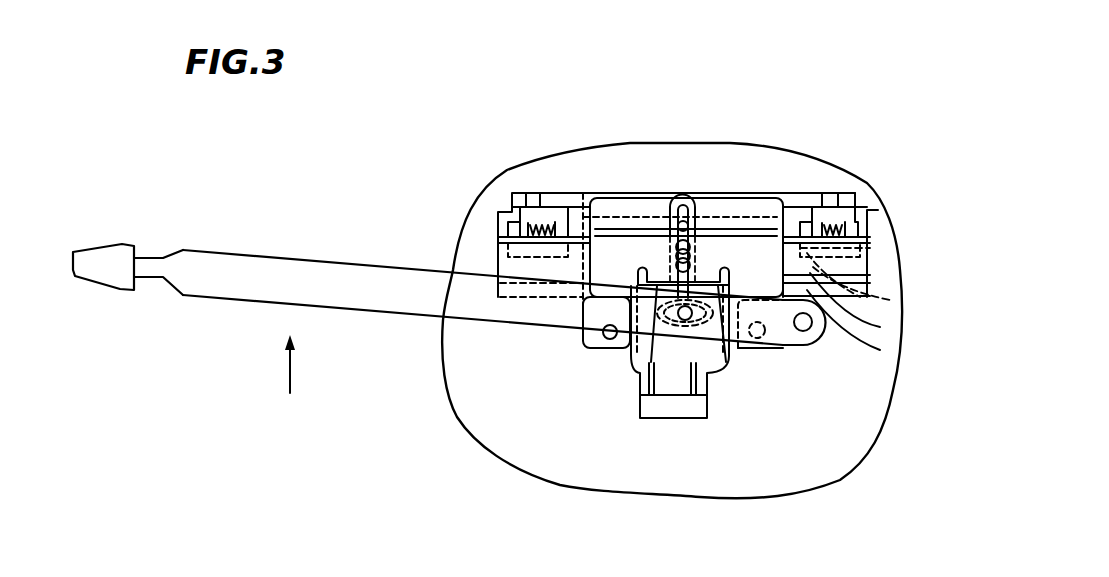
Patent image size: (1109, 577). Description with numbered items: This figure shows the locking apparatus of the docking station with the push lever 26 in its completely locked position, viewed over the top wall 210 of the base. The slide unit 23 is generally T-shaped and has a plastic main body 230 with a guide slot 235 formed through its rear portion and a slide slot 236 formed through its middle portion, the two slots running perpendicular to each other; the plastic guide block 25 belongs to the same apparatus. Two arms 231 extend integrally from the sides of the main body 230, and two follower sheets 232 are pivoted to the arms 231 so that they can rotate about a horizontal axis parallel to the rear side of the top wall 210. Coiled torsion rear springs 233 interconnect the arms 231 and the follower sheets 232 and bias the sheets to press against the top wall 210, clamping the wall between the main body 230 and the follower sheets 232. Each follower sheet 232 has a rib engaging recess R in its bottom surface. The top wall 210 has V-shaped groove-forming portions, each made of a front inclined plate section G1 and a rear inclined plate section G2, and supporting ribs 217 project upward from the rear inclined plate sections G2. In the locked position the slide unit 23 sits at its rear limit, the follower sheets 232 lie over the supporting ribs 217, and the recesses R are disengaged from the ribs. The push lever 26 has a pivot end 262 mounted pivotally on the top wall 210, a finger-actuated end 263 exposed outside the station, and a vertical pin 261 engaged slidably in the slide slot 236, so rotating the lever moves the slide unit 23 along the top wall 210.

The top wall 210 is at (472, 407).
The push lever 26 is at (306, 270).
The finger-actuated end 263 is at (120, 252).
The slide unit 23 is at (668, 428).
The main body 230 is at (740, 242).
The guide slot 235 is at (672, 206).
The guide block 25 is at (683, 205).
The arms 231 is at (818, 208).
The rear springs 233 is at (832, 232).
The rib engaging recess R is at (870, 248).
The supporting ribs 217 is at (815, 262).
The follower sheets 232 is at (818, 289).
The front inclined plate section G1 is at (880, 350).
The rear inclined plate section G2 is at (880, 327).
The slide slot 236 is at (628, 366).
The pin 261 is at (688, 318).
The pivot end 262 is at (808, 330).